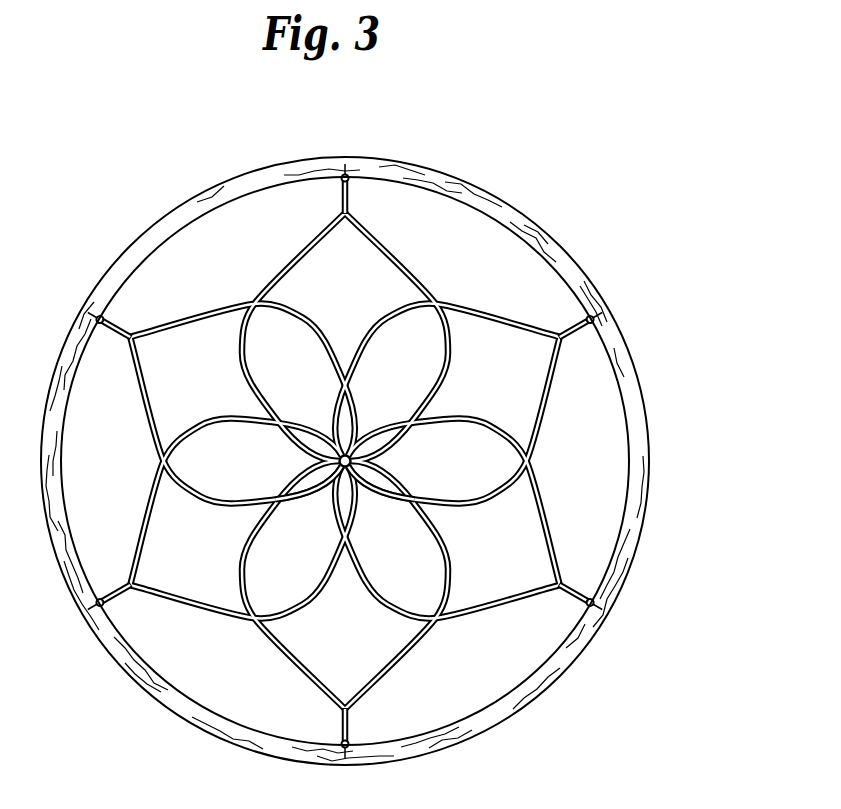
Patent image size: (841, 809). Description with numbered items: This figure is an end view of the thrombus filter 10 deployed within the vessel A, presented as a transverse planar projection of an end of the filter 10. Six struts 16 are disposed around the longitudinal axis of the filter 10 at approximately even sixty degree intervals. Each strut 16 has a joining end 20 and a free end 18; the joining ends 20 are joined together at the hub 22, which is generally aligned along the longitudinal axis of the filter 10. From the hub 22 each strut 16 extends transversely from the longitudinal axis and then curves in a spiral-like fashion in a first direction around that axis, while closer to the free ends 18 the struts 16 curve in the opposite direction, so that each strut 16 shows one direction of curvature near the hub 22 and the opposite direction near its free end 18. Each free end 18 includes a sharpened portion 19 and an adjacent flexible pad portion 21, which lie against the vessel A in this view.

The thrombus filter 10 is at (403, 421).
The struts 16 is at (293, 257).
The free end 18 is at (357, 175).
The sharpened portion 19 is at (345, 178).
The joining end 20 is at (346, 440).
The flexible pad portion 21 is at (347, 180).
The hub 22 is at (278, 463).
The vessel A is at (478, 196).